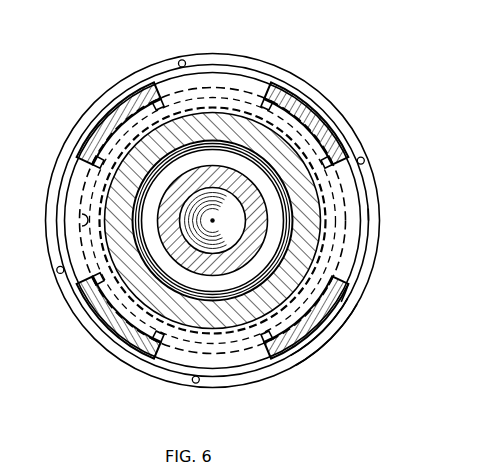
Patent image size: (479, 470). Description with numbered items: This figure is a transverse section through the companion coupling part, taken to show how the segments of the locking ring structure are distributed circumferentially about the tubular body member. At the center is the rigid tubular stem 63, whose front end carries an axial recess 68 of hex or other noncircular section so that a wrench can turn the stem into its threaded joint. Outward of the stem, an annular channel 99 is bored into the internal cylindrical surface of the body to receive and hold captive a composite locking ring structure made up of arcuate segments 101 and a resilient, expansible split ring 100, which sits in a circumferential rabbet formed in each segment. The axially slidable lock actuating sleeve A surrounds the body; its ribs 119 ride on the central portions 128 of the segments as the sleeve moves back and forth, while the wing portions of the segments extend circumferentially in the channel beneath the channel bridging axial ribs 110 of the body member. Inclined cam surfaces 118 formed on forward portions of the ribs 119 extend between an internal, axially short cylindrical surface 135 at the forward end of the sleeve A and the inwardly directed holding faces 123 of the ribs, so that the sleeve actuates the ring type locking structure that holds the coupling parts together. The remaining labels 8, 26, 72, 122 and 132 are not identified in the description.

The clutch assembly 8 is at (362, 236).
The bearing 26 is at (282, 242).
The tubular stem 63 is at (243, 197).
The axial recess 68 is at (222, 243).
The drum 72 is at (202, 157).
The annular channel 99 is at (323, 334).
The resilient split ring 100 is at (82, 193).
The arcuate segments 101 is at (250, 90).
The axial ribs 110 is at (320, 108).
The inclined cam surfaces 118 is at (338, 279).
The actuator sleeve ribs 119 is at (337, 294).
The friction pad 122 is at (265, 95).
The holding faces 123 is at (85, 247).
The central portions 128 is at (229, 73).
The spring 132 is at (80, 220).
The internal cylindrical surface 135 is at (182, 66).
The lock actuating sleeve A is at (320, 364).